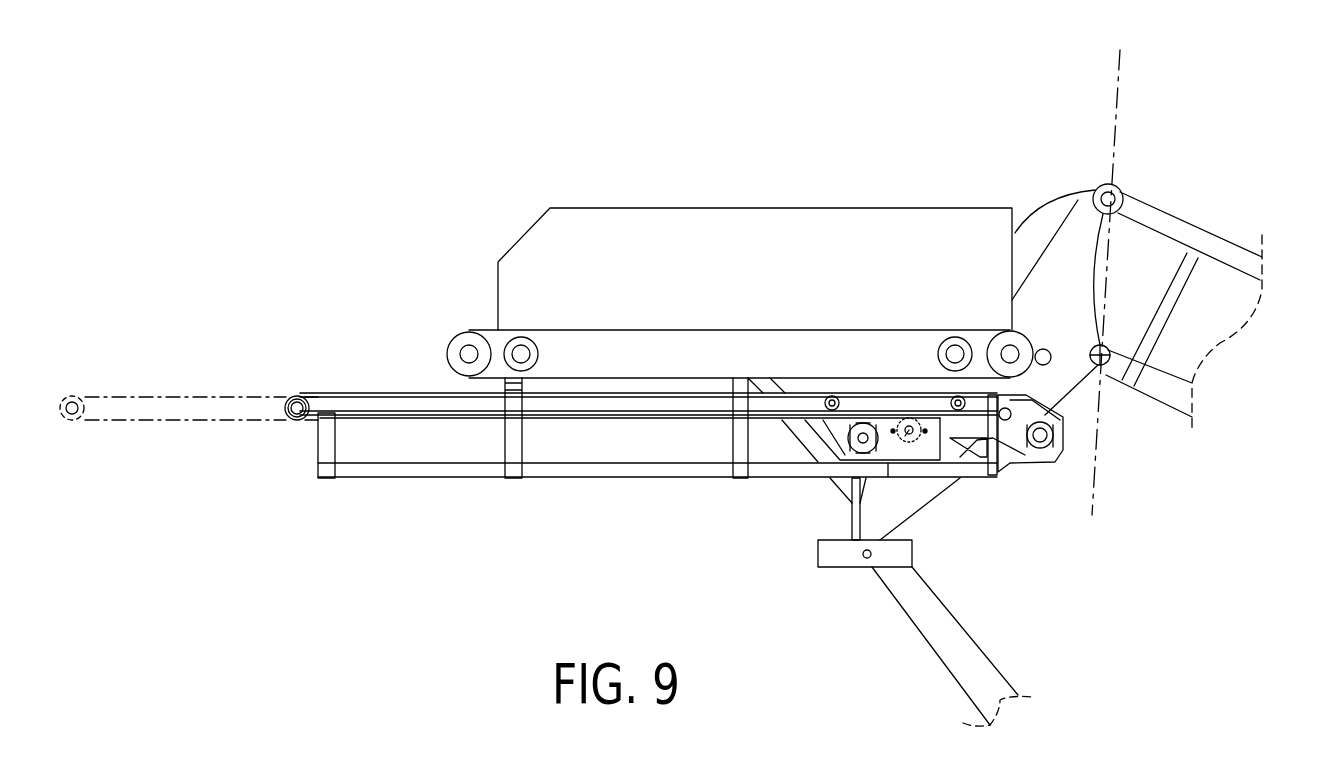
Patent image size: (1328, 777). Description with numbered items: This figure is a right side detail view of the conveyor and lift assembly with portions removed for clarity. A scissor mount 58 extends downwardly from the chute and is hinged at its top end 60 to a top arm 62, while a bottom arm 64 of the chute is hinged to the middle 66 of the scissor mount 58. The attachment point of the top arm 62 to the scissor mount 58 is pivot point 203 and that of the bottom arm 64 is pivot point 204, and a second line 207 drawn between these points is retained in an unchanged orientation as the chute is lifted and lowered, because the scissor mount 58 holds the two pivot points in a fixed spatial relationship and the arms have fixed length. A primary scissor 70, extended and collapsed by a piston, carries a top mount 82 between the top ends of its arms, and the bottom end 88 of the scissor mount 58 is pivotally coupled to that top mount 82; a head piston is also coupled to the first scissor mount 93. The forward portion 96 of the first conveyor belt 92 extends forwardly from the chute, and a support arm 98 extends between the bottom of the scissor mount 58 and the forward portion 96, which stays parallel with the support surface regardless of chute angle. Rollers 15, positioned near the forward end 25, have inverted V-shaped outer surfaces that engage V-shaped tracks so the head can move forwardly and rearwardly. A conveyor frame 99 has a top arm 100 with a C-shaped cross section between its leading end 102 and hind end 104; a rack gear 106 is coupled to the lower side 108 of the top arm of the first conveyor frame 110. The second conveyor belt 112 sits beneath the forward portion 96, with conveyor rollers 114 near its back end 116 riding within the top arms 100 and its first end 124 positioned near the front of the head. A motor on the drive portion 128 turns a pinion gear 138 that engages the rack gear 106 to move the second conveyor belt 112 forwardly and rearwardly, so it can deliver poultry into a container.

The rollers 15 is at (512, 337).
The forward end 25 is at (447, 354).
The scissor mount 58 is at (1032, 212).
The top end 60 is at (1078, 187).
The top arm 62 is at (1218, 233).
The bottom arm 64 is at (1157, 405).
The middle 66 is at (1100, 375).
The primary scissor 70 is at (936, 687).
The top mount 82 is at (818, 558).
The bottom end 88 is at (850, 522).
The first conveyor belt 92 is at (545, 322).
The scissor mount (first one of the pair) 93 is at (935, 478).
The forward portion 96 is at (600, 330).
The support arm 98 is at (800, 437).
The conveyor frame 99 is at (402, 478).
The top arm 100 is at (342, 393).
The leading end 102 is at (317, 395).
The hind end 104 is at (1012, 410).
The rack gear 106 is at (945, 486).
The lower side 108 is at (607, 417).
The first conveyor frame 110 is at (325, 495).
The second conveyor belt 112 is at (298, 420).
The conveyor rollers 114 is at (833, 396).
The back end 116 is at (978, 400).
The first end 124 is at (287, 415).
The drive portion 128 is at (922, 450).
The pinion gear 138 is at (905, 436).
The pivot point 203 is at (1113, 187).
The pivot point 204 is at (1103, 352).
The second line 207 is at (1120, 73).